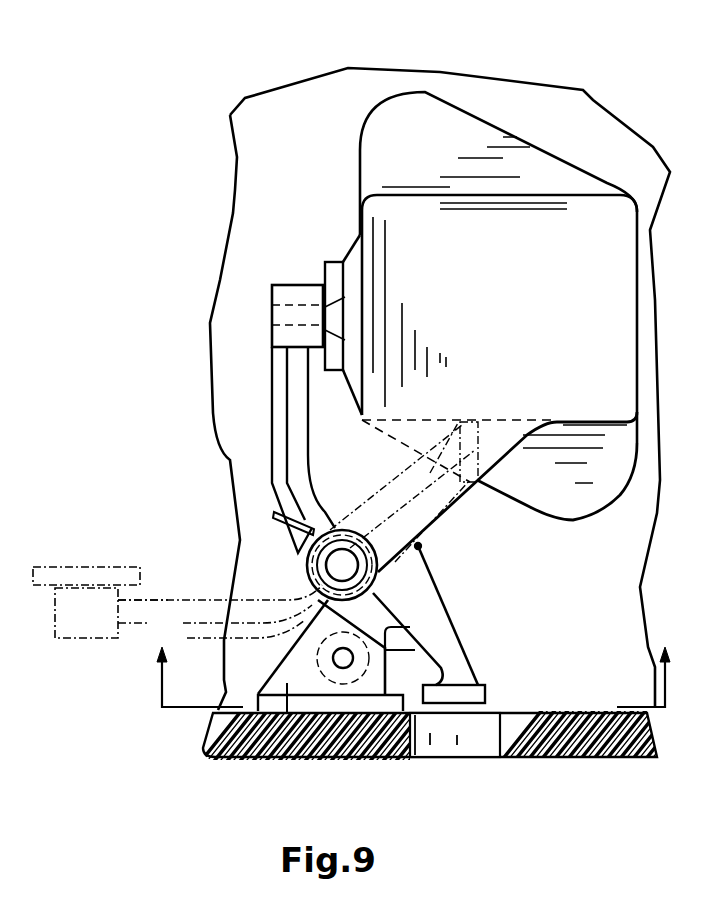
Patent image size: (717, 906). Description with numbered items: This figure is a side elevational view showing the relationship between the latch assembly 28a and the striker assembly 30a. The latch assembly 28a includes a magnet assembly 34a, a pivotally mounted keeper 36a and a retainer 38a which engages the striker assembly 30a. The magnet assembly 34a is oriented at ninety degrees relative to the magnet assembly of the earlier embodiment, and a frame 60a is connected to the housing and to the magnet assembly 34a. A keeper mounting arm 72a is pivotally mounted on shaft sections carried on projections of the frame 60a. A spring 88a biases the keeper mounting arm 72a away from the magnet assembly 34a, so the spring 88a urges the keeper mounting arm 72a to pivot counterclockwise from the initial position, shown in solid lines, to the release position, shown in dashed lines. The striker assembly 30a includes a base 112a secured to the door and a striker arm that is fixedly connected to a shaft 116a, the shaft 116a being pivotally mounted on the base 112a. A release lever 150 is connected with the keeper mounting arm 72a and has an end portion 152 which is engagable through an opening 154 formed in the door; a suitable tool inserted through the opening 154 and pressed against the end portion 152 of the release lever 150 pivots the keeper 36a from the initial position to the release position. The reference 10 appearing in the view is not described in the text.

The latch assembly 28a is at (603, 163).
The magnet assembly 34a is at (602, 346).
The frame 60a is at (602, 430).
The keeper 36a is at (325, 273).
The keeper mounting arm 72a is at (280, 404).
The spring 88a is at (285, 486).
The retainer 38a is at (306, 540).
The striker assembly 30a is at (273, 668).
The release lever 150 is at (437, 632).
The end portion 152 is at (478, 697).
The shaft 116a is at (343, 658).
The base 112a is at (290, 726).
The opening 154 is at (450, 737).
The vehicle frame reference 10 is at (414, 664).